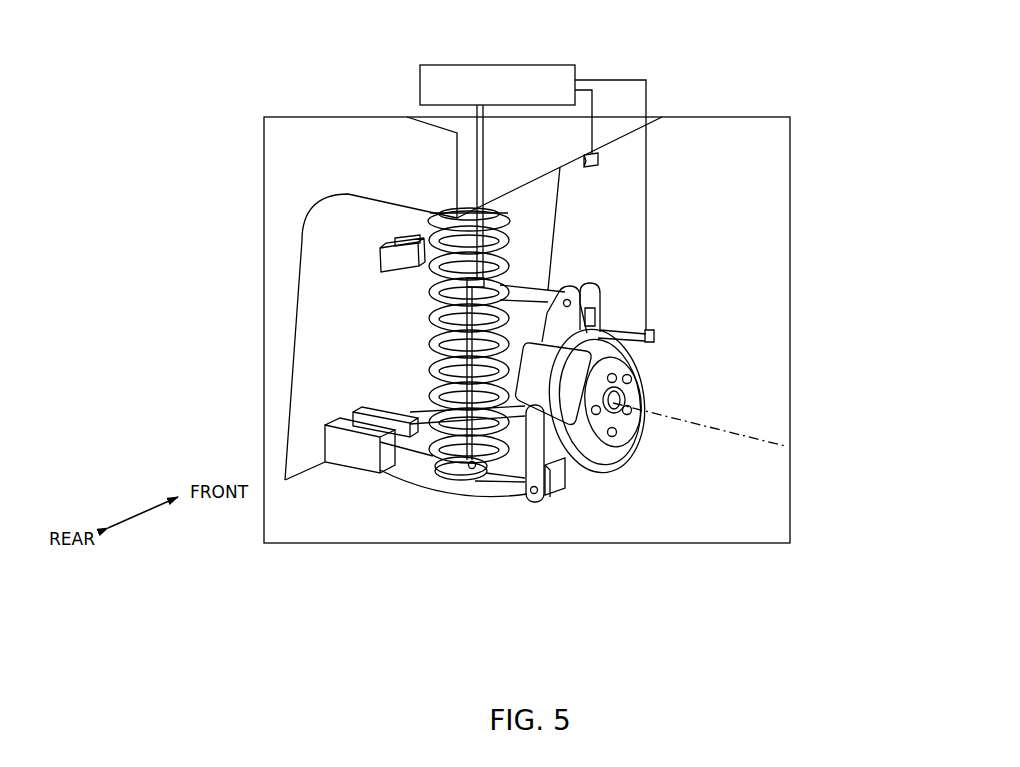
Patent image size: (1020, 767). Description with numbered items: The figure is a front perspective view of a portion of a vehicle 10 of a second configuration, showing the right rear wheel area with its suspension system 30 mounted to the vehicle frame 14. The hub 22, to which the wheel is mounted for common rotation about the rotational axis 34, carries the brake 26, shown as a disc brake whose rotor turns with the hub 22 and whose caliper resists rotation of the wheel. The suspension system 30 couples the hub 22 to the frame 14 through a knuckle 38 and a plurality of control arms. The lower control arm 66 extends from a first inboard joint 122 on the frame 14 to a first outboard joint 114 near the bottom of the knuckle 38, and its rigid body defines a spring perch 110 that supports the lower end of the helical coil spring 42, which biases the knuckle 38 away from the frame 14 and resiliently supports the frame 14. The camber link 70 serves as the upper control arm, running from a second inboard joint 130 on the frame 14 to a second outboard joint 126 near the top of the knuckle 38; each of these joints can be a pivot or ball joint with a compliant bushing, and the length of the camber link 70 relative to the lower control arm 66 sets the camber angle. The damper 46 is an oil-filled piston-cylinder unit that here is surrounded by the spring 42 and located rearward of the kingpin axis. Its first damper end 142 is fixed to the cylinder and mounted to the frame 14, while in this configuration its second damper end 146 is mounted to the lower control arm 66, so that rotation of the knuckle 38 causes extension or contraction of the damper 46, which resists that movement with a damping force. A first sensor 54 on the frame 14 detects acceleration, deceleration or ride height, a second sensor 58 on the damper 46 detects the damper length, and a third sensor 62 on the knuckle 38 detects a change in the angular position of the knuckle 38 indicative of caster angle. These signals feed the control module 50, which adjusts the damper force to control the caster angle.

The vehicle 10 is at (289, 142).
The vehicle frame 14 is at (275, 193).
The hub 22 is at (618, 422).
The brake 26 is at (567, 413).
The suspension system 30 is at (364, 350).
The rotational axis 34 is at (757, 432).
The knuckle 38 is at (532, 470).
The spring 42 is at (430, 315).
The damper 46 is at (430, 288).
The control module 50 is at (460, 64).
The first sensor 54 is at (592, 157).
The second sensor 58 is at (455, 232).
The third sensor 62 is at (655, 335).
The lower control arm 66 is at (457, 483).
The camber link 70 is at (548, 278).
The spring perch 110 is at (436, 476).
The first outboard joint 114 is at (552, 483).
The first inboard joint 122 is at (350, 418).
The second outboard joint 126 is at (597, 292).
The second inboard joint 130 is at (427, 232).
The first damper end 142 is at (480, 215).
The second damper end 146 is at (472, 468).